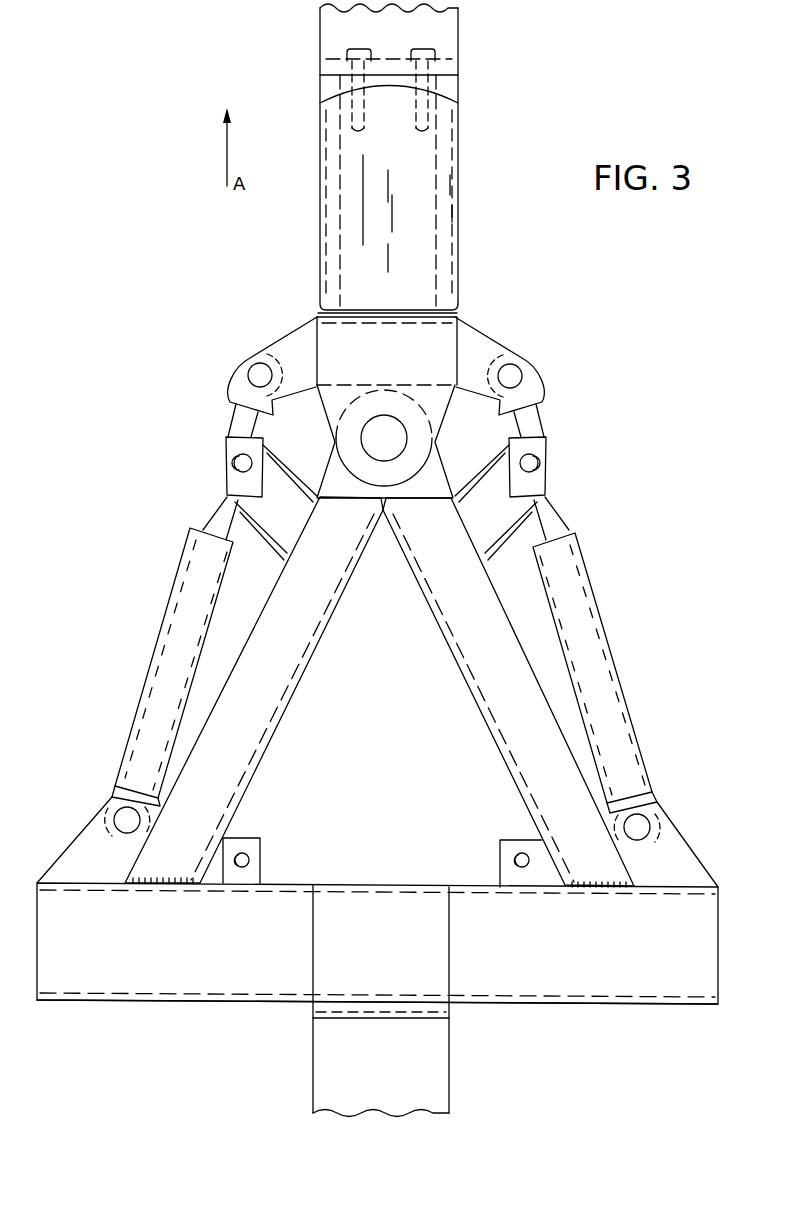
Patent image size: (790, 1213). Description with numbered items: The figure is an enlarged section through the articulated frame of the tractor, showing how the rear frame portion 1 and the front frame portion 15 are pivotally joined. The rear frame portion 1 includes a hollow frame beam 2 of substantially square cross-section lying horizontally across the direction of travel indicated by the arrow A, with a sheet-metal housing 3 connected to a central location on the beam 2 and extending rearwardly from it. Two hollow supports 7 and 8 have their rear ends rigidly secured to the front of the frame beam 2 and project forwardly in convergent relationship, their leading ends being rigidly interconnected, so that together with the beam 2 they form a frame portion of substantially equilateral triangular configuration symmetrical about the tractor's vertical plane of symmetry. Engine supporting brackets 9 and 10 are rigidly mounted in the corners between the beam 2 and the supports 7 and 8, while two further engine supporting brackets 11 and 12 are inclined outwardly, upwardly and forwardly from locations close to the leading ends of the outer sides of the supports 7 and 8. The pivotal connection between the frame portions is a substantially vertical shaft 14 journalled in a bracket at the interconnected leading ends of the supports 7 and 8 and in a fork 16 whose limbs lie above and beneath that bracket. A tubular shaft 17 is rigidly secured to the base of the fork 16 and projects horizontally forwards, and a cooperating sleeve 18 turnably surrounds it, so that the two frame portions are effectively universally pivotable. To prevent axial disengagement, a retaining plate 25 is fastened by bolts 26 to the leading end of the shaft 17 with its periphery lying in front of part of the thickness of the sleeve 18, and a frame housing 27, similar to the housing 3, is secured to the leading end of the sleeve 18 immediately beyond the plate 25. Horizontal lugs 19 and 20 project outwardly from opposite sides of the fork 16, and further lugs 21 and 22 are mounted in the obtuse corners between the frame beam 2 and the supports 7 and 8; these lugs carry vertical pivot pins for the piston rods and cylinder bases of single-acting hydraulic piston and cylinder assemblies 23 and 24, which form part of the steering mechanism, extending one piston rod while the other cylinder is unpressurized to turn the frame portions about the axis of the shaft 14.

The rear frame portion 1 is at (628, 1012).
The frame beam 2 is at (240, 999).
The housing 3 is at (313, 1073).
The hollow support 7 is at (298, 673).
The hollow support 8 is at (455, 668).
The engine supporting bracket 9 is at (260, 845).
The engine supporting bracket 10 is at (500, 845).
The engine supporting bracket 11 is at (227, 441).
The engine supporting bracket 12 is at (545, 447).
The shaft 14 is at (397, 433).
The front frame portion 15 is at (314, 36).
The fork 16 is at (328, 337).
The tubular shaft 17 is at (430, 177).
The sleeve 18 is at (448, 251).
The lugs 19 is at (270, 347).
The lugs 20 is at (490, 350).
The lugs 21 is at (80, 843).
The lugs 22 is at (682, 853).
The hydraulic piston and cylinder assembly 23 is at (158, 640).
The hydraulic piston and cylinder assembly 24 is at (602, 638).
The retaining plate 25 is at (450, 69).
The bolts 26 is at (421, 50).
The frame housing 27 is at (459, 38).